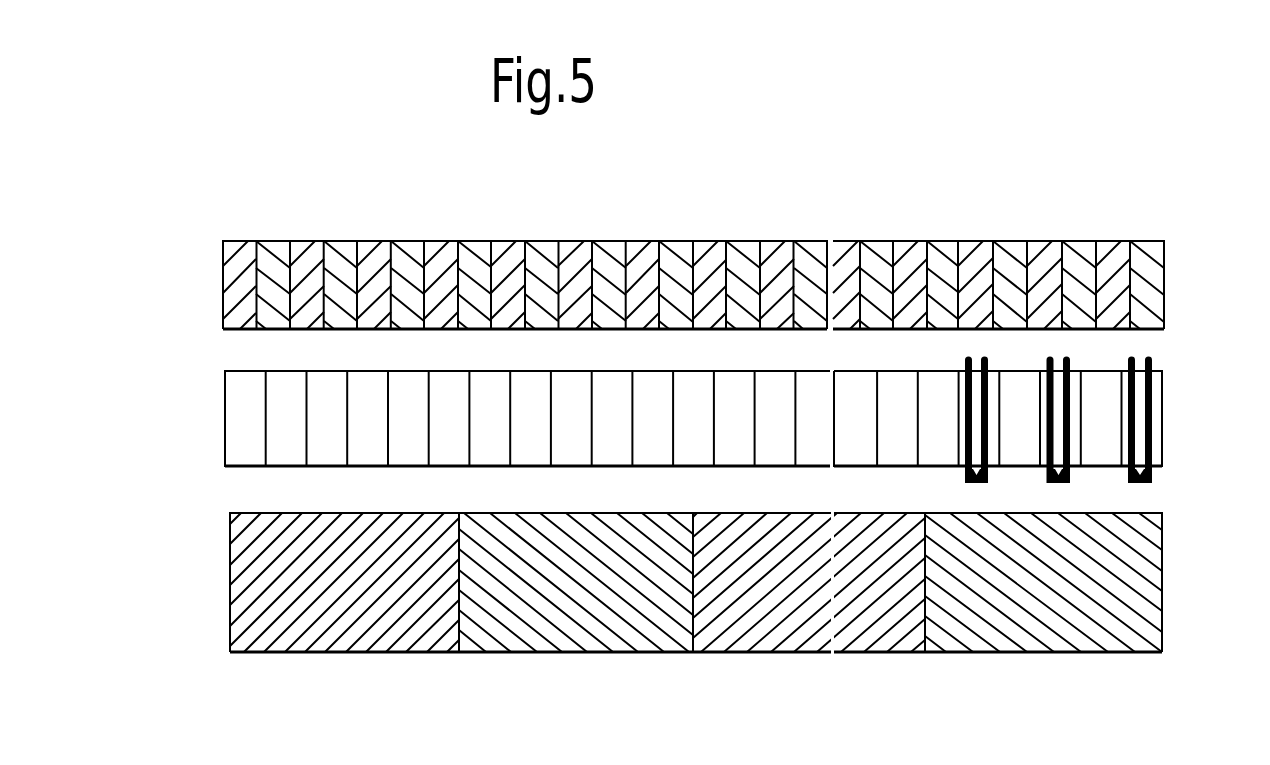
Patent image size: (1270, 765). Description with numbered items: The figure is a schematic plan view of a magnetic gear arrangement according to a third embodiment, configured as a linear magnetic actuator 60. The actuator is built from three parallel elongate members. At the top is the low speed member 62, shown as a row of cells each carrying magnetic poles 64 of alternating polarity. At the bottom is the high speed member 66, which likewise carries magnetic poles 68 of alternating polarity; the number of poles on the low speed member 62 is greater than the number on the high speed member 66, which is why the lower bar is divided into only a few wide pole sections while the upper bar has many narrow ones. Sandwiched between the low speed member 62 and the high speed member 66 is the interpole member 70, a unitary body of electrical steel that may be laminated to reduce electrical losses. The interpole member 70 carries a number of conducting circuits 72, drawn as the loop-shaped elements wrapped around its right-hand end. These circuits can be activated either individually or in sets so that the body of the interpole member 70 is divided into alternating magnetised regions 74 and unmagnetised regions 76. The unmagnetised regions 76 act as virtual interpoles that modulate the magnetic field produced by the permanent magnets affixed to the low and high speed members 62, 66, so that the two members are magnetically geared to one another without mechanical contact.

The linear magnetic actuator 60 is at (691, 258).
The low speed member 62 is at (1173, 241).
The magnetic poles 64 is at (744, 266).
The high speed member 66 is at (745, 603).
The magnetic poles 68 is at (847, 635).
The interpole member 70 is at (677, 424).
The conducting circuits 72 is at (1153, 387).
The magnetised regions 74 is at (233, 437).
The unmagnetised regions 76 is at (288, 453).